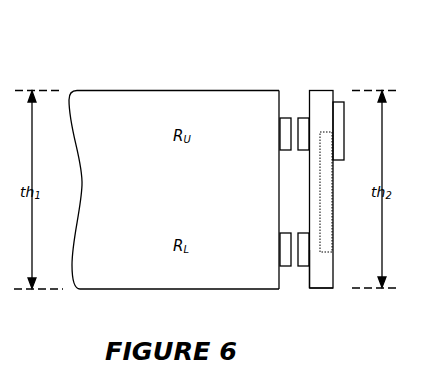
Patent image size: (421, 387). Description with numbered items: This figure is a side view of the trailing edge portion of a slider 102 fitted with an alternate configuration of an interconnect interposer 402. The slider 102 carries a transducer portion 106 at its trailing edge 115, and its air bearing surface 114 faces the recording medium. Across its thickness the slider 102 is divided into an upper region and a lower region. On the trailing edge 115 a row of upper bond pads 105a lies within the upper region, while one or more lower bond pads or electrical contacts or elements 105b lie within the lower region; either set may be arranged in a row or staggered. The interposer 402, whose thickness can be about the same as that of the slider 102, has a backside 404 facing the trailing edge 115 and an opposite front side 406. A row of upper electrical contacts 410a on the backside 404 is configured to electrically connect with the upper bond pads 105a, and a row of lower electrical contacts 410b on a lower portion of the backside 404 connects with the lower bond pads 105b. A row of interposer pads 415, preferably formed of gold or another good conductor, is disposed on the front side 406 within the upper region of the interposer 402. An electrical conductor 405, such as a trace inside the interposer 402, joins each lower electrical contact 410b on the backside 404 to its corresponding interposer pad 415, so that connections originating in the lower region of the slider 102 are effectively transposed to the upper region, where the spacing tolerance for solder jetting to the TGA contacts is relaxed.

The slider 102 is at (130, 90).
The transducer portion 106 is at (193, 90).
The air bearing surface 114 is at (148, 290).
The trailing edge 115 is at (279, 190).
The upper bond pads 105a is at (285, 118).
The lower bond pads 105b is at (285, 266).
The upper electrical contacts 410a is at (303, 118).
The lower electrical contacts 410b is at (300, 266).
The interconnect interposer 402 is at (322, 90).
The backside of the interposer 404 is at (308, 282).
The electrical conductor 405 is at (322, 203).
The front side of the interposer 406 is at (333, 278).
The interposer pads 415 is at (337, 102).